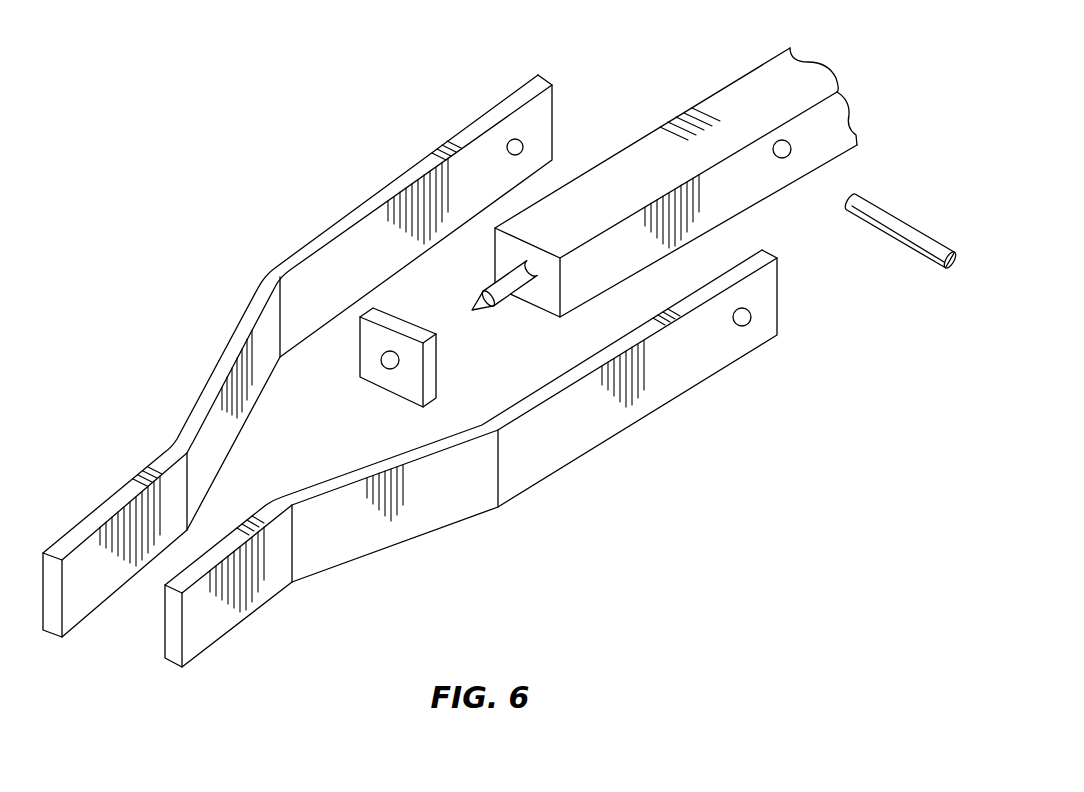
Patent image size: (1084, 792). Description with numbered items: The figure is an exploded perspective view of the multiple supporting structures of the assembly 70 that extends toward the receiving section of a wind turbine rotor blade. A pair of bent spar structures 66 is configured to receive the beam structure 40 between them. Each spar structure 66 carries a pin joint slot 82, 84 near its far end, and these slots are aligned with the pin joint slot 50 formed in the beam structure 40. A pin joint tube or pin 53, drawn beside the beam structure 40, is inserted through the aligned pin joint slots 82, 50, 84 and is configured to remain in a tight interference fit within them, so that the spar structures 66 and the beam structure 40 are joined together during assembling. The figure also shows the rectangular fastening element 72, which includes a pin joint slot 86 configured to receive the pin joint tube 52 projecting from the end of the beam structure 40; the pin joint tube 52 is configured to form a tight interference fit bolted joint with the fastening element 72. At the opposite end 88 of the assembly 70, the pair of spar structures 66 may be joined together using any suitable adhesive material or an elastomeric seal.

The beam structure 40 is at (735, 91).
The pin joint slot 50 is at (783, 158).
The pin joint tube 52 is at (486, 307).
The pin joint tube or pin 53 is at (884, 214).
The spar structures 66 is at (267, 278).
The assembly 70 is at (177, 139).
The rectangular fastening element 72 is at (421, 333).
The pin joint slot 82 is at (742, 326).
The pin joint slot 84 is at (514, 139).
The pin joint slot 86 is at (402, 383).
The end 88 is at (93, 636).